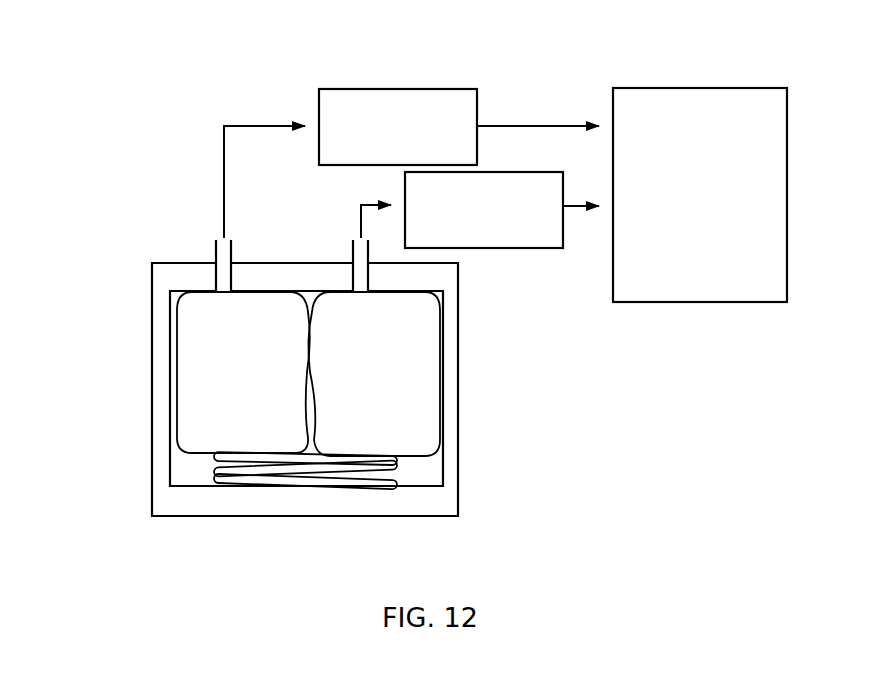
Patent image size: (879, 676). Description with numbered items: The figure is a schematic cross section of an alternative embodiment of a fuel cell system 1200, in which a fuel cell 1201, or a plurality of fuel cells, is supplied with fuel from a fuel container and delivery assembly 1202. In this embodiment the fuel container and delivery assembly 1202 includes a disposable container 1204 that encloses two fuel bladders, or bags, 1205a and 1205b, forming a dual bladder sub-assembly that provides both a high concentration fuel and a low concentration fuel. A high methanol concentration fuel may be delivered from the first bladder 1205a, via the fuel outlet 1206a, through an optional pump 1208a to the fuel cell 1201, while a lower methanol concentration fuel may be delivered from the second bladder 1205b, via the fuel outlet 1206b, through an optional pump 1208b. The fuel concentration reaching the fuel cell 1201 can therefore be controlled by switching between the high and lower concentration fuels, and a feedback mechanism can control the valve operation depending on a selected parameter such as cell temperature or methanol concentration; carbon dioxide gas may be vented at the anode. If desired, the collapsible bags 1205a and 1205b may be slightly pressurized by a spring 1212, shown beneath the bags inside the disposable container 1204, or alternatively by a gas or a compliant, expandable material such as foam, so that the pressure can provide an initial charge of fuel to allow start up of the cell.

The fuel cell system 1200 is at (205, 56).
The fuel cell 1201 is at (700, 88).
The fuel container and delivery assembly 1202 is at (152, 302).
The disposable container 1204 is at (170, 459).
The fuel bladder 1205a is at (188, 387).
The fuel bladder 1205b is at (418, 387).
The fuel outlet 1206a is at (213, 250).
The fuel outlet 1206b is at (350, 250).
The pump 1208a is at (406, 89).
The pump 1208b is at (476, 248).
The spring 1212 is at (298, 478).